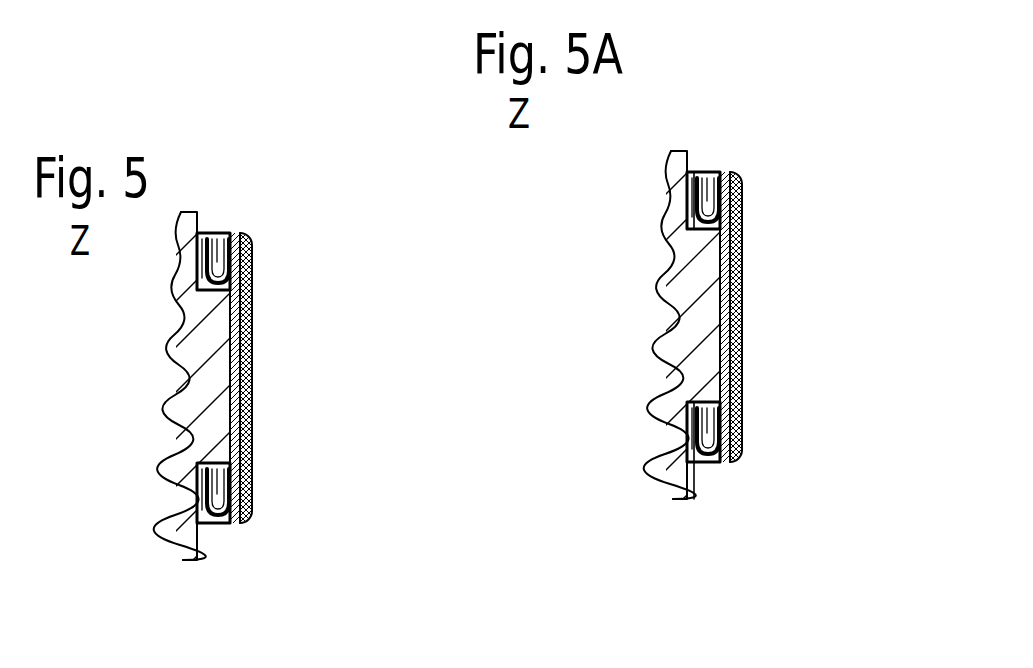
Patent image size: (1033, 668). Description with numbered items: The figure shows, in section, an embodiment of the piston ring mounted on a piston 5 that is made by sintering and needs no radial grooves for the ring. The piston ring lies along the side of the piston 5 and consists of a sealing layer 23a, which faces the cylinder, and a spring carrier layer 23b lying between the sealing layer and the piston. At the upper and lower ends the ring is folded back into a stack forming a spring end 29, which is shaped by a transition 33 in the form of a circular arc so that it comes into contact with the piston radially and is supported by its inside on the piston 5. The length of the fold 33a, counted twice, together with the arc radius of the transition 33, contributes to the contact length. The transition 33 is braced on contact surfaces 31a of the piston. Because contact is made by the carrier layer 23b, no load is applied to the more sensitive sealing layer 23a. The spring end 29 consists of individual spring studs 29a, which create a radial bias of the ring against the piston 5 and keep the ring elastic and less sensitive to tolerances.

In FIG. 5, the piston 5 is at (205, 330).
In FIG. 5A, the piston 5 is at (751, 336).
In FIG. 5, the sealing layer 23a is at (254, 360).
In FIG. 5A, the sealing layer 23a is at (794, 317).
In FIG. 5, the spring carrier layer 23b is at (233, 413).
In FIG. 5A, the spring carrier layer 23b is at (777, 317).
In FIG. 5, the spring end 29 is at (233, 539).
In FIG. 5A, the spring end 29 is at (745, 465).
In FIG. 5, the spring studs 29a is at (215, 525).
In FIG. 5A, the spring studs 29a is at (737, 490).
In FIG. 5A, the contact surfaces 31a is at (648, 374).
In FIG. 5, the transition 33 is at (244, 224).
In FIG. 5A, the transition 33 is at (741, 158).
In FIG. 5A, the fold 33a is at (772, 185).